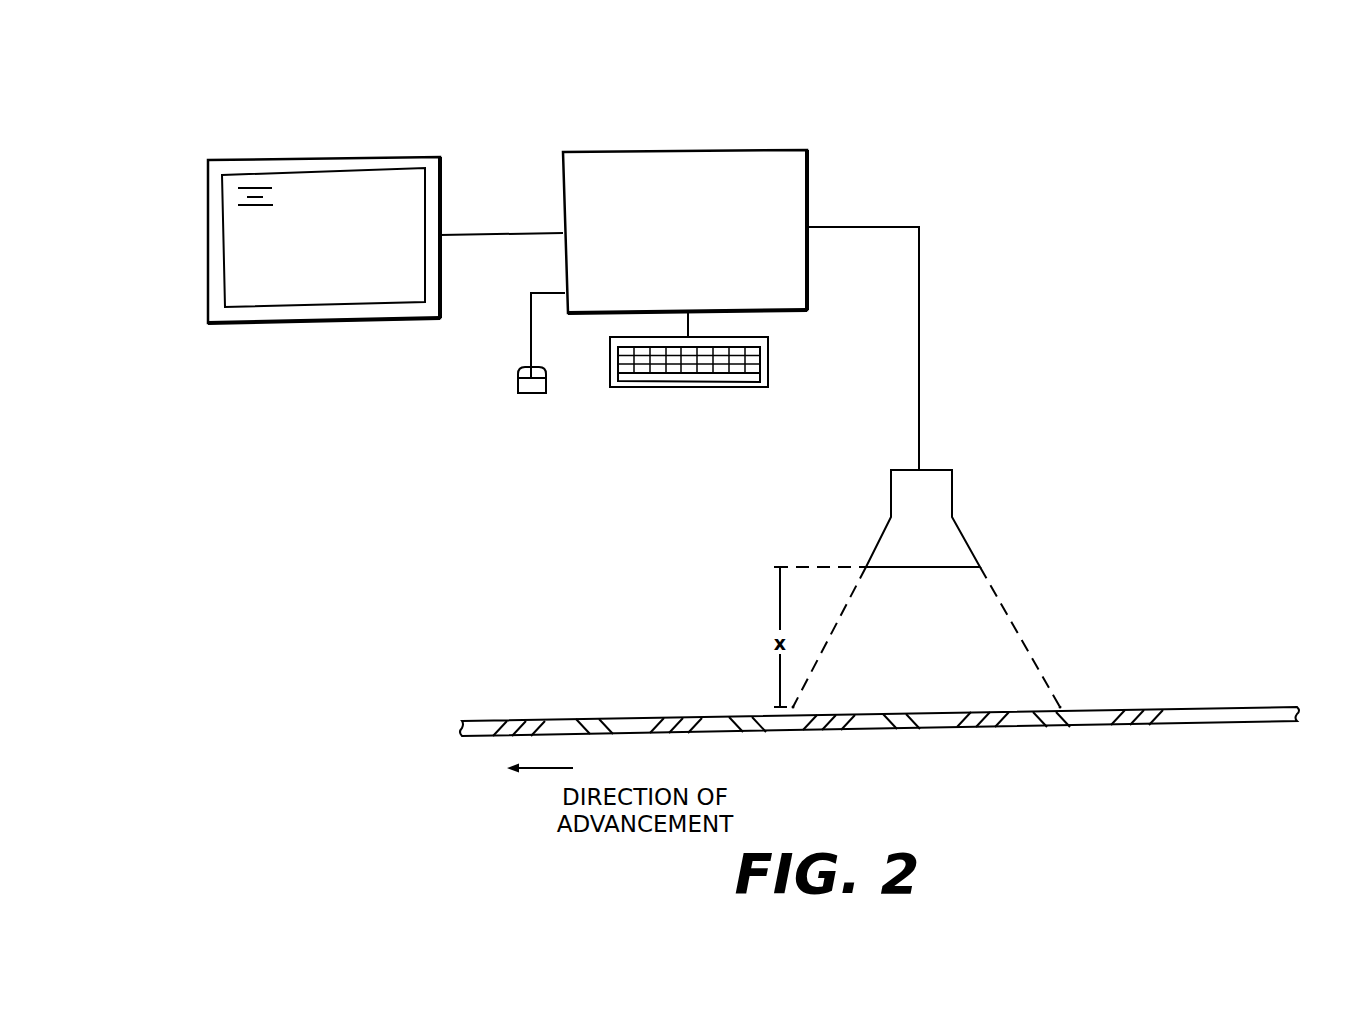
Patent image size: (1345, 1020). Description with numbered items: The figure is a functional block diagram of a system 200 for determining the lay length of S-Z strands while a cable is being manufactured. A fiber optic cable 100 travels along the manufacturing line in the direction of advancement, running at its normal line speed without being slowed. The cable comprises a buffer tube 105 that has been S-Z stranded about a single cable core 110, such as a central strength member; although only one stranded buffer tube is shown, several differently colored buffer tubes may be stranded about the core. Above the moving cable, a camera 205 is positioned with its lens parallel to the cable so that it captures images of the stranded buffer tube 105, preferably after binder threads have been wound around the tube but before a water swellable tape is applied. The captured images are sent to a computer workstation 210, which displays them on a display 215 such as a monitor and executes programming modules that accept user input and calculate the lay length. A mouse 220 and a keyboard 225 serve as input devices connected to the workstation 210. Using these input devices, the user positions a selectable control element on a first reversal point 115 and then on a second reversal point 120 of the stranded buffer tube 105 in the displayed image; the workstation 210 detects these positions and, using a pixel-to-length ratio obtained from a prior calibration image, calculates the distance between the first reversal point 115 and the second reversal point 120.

The fiber optic cable 100 is at (892, 718).
The buffer tube 105 is at (1122, 712).
The cable core 110 is at (1213, 718).
The first reversal point 115 is at (1023, 723).
The second reversal point 120 is at (942, 723).
The system for determining lay length 200 is at (1160, 184).
The camera 205 is at (952, 487).
The computer workstation 210 is at (760, 148).
The display 215 is at (397, 157).
The mouse 220 is at (525, 394).
The keyboard 225 is at (690, 388).